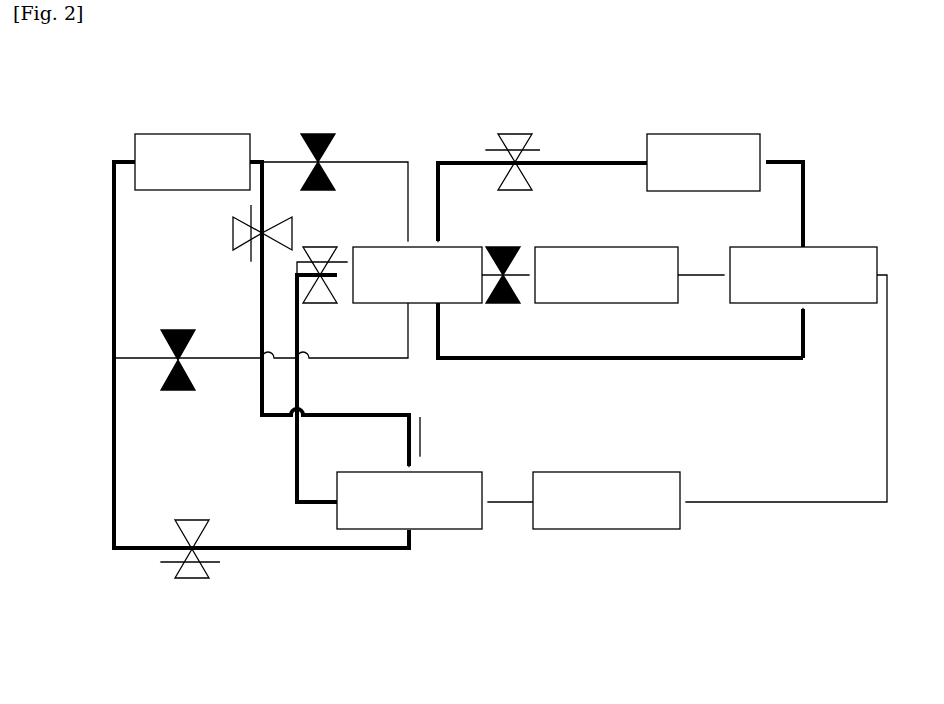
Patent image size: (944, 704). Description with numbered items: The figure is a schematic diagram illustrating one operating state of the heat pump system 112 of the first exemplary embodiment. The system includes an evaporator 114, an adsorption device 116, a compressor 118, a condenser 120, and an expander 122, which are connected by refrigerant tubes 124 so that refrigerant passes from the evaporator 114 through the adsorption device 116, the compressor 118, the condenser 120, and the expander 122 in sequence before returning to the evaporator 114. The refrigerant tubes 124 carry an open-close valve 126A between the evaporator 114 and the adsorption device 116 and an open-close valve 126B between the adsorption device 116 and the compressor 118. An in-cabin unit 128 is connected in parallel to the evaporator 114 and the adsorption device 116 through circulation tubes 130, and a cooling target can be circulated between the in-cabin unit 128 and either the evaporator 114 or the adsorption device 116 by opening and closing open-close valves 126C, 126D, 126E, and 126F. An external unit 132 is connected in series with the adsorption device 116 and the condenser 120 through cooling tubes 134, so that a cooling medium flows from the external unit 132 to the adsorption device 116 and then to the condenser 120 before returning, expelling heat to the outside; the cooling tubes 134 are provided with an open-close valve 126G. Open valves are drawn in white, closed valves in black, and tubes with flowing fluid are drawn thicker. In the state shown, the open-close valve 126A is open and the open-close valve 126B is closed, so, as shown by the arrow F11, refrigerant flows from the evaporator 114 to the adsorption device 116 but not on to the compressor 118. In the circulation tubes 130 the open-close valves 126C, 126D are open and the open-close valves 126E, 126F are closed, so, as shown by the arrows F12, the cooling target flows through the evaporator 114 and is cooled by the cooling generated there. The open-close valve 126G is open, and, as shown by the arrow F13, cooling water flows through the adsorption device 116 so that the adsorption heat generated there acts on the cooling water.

The heat pump system 112 is at (741, 612).
The evaporator 114 is at (445, 530).
The adsorption device 116 is at (448, 304).
The compressor 118 is at (623, 304).
The condenser 120 is at (833, 304).
The expander 122 is at (619, 530).
The refrigerant tubes 124 is at (825, 503).
The open-close valve 126A is at (324, 304).
The open-close valve 126B is at (508, 305).
The open-close valve 126C is at (233, 233).
The open-close valve 126D is at (192, 579).
The open-close valve 126E is at (326, 134).
The open-close valve 126F is at (178, 391).
The open-close valve 126G is at (516, 134).
The in-cabin unit 128 is at (200, 134).
The circulation tubes 130 is at (113, 310).
The external unit 132 is at (701, 134).
The cooling tubes 134 is at (708, 361).
The arrow F11 is at (299, 258).
The arrows F12 is at (246, 257).
The arrow F13 is at (541, 150).